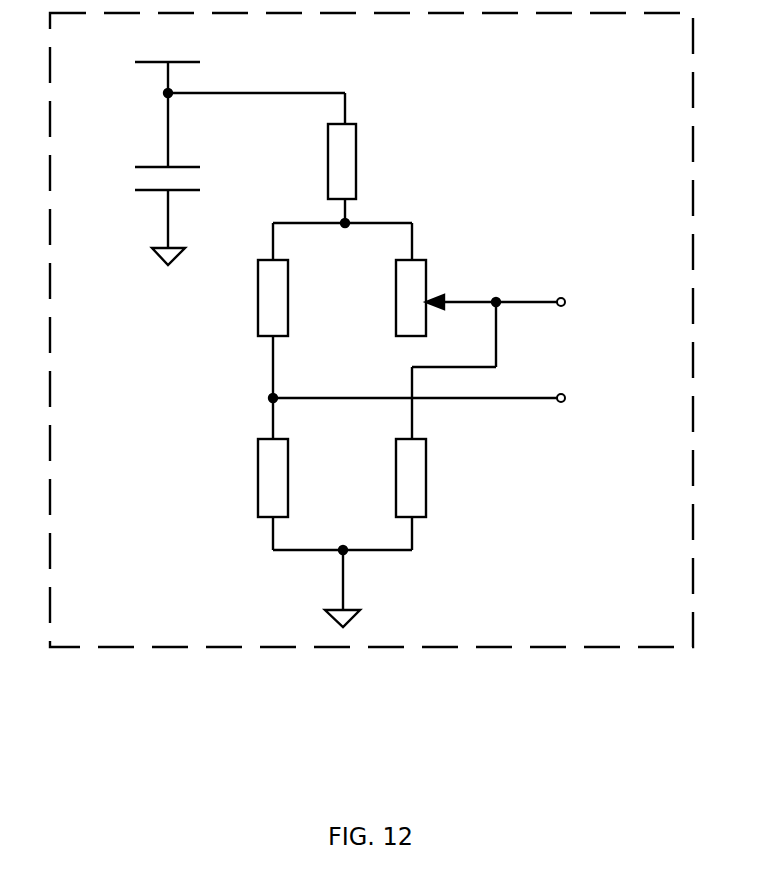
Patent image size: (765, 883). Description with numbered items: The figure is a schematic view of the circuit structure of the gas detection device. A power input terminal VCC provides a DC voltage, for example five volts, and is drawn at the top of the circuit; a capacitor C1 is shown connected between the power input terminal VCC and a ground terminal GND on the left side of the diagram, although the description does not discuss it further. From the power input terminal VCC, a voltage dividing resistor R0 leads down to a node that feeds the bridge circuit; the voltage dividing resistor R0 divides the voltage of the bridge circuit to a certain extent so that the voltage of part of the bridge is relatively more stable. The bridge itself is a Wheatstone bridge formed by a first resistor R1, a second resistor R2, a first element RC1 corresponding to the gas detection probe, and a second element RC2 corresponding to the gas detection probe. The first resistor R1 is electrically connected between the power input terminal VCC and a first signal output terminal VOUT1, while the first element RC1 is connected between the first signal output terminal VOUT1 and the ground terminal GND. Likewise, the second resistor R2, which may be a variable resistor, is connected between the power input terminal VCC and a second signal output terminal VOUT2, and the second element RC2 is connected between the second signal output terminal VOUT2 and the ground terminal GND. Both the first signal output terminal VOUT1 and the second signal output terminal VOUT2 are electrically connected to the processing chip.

The capacitor C1 is at (146, 207).
The voltage dividing resistor R0 is at (361, 175).
The first resistor R1 is at (289, 331).
The second resistor R2 is at (446, 279).
The first element corresponding to the gas detection probe RC1 is at (300, 494).
The second element corresponding to the gas detection probe RC2 is at (405, 496).
The power input terminal VCC is at (237, 100).
The ground terminal GND is at (247, 434).
The first signal output terminal VOUT1 is at (456, 399).
The second signal output terminal VOUT2 is at (527, 365).